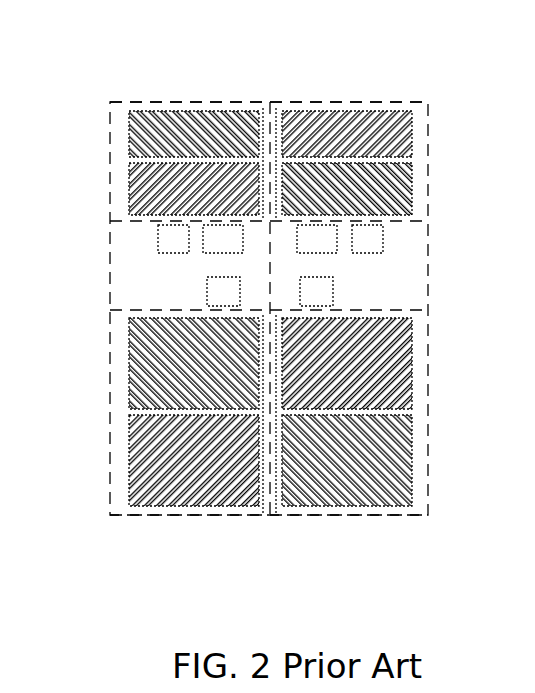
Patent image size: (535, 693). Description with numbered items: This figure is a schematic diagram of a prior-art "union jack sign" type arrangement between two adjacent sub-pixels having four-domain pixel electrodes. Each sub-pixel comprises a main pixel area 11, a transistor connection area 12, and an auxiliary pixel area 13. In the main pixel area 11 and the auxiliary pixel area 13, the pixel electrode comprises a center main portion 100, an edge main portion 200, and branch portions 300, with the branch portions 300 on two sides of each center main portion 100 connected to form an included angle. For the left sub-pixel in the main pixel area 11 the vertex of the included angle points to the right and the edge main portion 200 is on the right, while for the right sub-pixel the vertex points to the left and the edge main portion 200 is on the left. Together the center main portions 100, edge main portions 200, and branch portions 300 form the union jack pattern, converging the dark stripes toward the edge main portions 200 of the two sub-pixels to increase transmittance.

The main pixel area 11 is at (150, 102).
The transistor connection area 12 is at (138, 267).
The auxiliary pixel area 13 is at (150, 515).
The center main portion 100 is at (135, 163).
The edge main portion 200 is at (293, 562).
The branch portions 300 is at (135, 127).